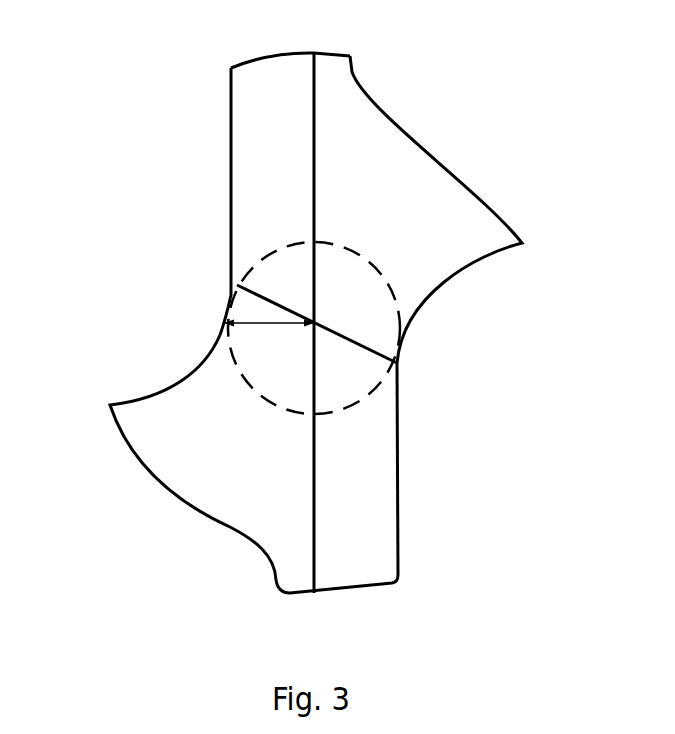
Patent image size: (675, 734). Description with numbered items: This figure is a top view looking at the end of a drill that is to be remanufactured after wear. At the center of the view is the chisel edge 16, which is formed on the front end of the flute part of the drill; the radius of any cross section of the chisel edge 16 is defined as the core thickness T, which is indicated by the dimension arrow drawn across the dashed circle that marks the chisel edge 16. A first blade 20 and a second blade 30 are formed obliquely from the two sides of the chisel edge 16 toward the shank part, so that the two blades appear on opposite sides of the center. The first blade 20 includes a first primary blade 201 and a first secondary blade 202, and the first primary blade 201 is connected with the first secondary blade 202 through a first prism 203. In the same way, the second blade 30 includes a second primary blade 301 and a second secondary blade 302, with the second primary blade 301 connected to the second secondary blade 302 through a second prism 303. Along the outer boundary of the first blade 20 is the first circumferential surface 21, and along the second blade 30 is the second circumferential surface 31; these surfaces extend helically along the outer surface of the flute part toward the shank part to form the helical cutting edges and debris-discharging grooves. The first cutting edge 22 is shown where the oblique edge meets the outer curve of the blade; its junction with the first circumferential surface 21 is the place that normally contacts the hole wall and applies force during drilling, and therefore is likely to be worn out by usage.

The second blade 30 is at (80, 112).
The second circumferential surface 31 is at (243, 72).
The second primary blade 301 is at (255, 173).
The second secondary blade 302 is at (342, 128).
The second prism 303 is at (318, 221).
The first blade 20 is at (553, 473).
The first circumferential surface 21 is at (373, 598).
The first primary blade 201 is at (377, 536).
The first secondary blade 202 is at (283, 483).
The first prism 203 is at (313, 427).
The first cutting edge 22 is at (406, 357).
The chisel edge 16 is at (235, 368).
The core thickness T is at (253, 318).